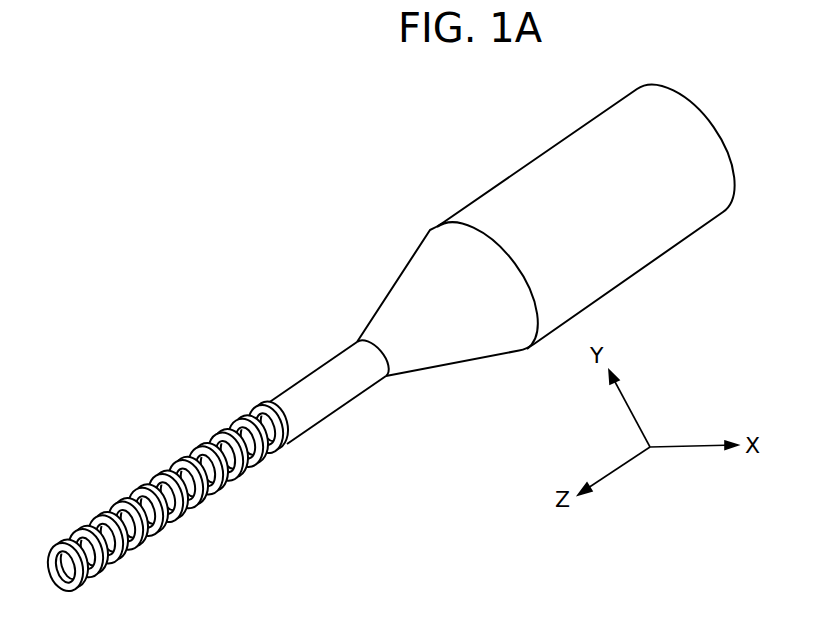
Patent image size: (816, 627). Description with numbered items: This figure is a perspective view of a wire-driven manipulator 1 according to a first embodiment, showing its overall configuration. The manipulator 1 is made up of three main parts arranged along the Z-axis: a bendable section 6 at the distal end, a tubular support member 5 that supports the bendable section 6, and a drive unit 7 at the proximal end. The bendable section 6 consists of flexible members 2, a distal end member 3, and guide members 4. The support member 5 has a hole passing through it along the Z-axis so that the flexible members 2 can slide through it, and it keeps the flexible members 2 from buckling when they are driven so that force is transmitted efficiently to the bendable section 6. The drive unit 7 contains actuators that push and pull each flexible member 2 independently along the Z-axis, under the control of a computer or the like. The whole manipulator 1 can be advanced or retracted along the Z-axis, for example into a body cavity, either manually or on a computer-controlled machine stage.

The wire-driven manipulator 1 is at (398, 530).
The flexible member 2 is at (190, 455).
The distal end member 3 is at (57, 545).
The guide member 4 is at (143, 490).
The support member 5 is at (308, 383).
The bendable section 6 is at (287, 452).
The drive unit 7 is at (520, 185).